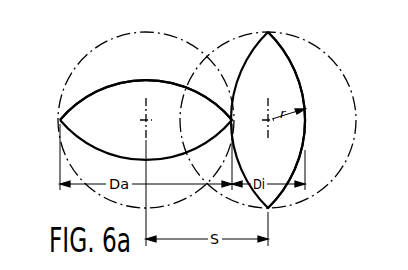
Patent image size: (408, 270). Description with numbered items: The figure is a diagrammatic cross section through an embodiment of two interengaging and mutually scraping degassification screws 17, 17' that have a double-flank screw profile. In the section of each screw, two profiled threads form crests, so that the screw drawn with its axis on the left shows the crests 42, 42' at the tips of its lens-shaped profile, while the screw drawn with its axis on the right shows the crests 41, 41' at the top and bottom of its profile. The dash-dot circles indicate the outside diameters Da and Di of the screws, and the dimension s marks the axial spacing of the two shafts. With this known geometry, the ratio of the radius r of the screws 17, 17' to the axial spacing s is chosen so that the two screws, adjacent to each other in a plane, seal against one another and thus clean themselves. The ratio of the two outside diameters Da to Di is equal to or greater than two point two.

The degassification screw 17 is at (268, 113).
The degassification screw 17' is at (137, 120).
The crest 41 is at (259, 108).
The crest 41' is at (294, 137).
The crest 42 is at (146, 120).
The crest 42' is at (131, 128).